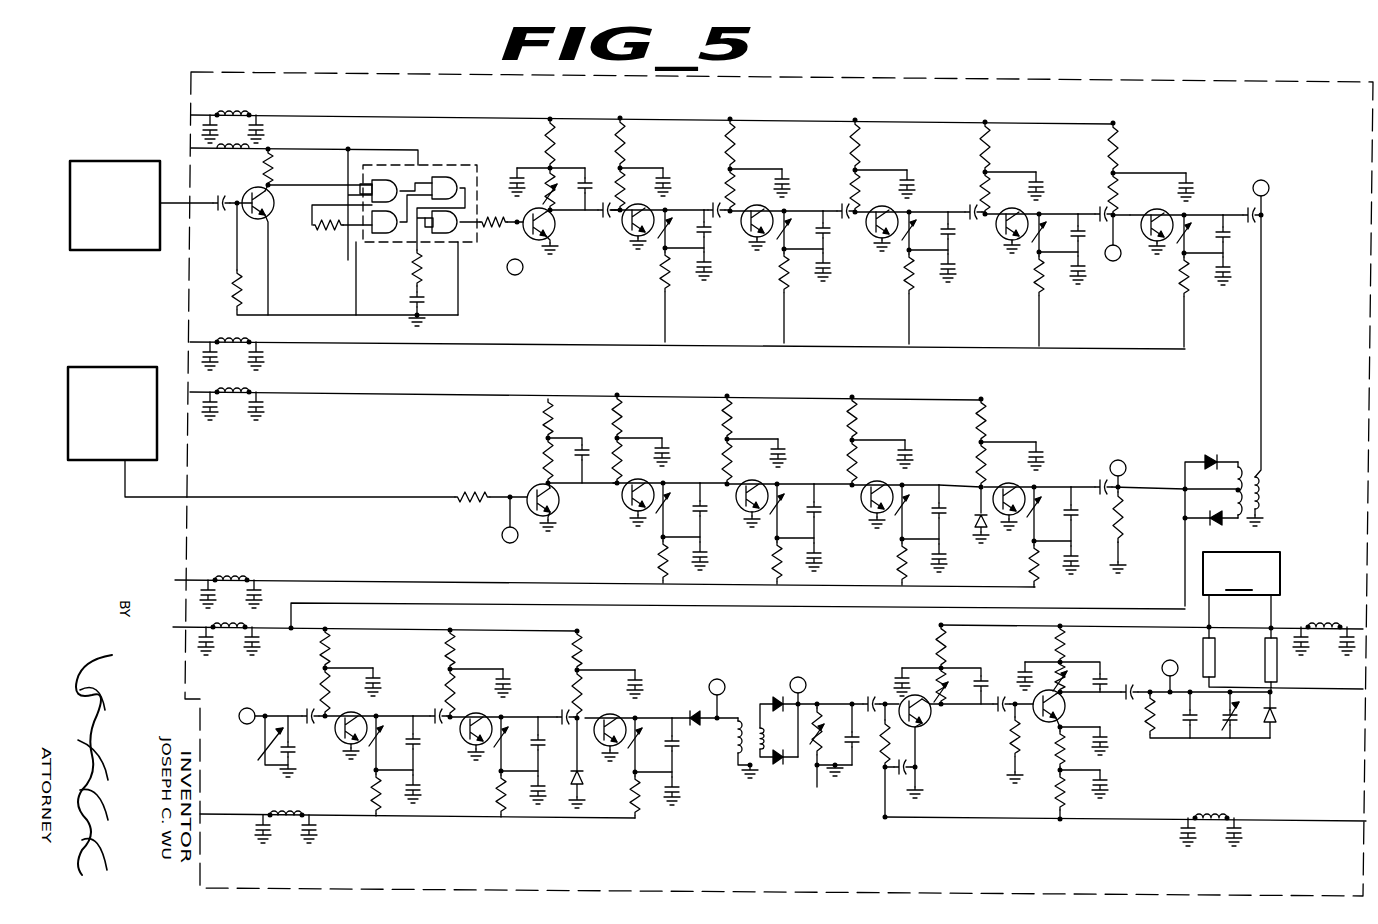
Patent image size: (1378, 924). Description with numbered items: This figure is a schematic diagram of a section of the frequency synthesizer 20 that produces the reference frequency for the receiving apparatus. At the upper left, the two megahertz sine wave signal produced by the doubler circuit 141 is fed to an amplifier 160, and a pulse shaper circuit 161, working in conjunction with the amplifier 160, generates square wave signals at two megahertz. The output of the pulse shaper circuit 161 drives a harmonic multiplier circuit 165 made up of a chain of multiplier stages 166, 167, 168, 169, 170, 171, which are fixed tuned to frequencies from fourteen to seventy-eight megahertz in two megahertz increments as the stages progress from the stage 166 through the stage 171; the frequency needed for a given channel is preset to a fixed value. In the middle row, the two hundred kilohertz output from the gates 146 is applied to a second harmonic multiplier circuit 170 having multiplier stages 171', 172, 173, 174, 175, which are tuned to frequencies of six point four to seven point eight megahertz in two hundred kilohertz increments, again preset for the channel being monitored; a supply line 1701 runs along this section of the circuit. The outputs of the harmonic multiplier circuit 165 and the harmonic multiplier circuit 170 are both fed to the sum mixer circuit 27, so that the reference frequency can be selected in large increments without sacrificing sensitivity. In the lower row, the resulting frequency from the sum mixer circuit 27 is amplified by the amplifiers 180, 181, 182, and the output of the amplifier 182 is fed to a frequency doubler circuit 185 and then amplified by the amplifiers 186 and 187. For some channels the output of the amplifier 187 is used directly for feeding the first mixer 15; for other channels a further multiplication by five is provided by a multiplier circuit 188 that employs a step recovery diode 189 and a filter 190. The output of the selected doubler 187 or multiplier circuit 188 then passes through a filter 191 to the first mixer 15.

The frequency synthesizer 20 is at (186, 525).
The doubler circuit 141 is at (108, 160).
The gates 146 is at (88, 460).
The amplifier 160 is at (270, 220).
The pulse shaper circuit 161 is at (440, 163).
The harmonic multiplier circuit 165 is at (1048, 122).
The multiplier stage 166 is at (547, 244).
The multiplier stage 167 is at (632, 244).
The multiplier stage 168 is at (744, 243).
The multiplier stage 169 is at (868, 245).
The harmonic multiplier circuit 170 is at (1000, 240).
The multiplier stage 171 is at (1188, 299).
The multiplier stage 171' is at (567, 483).
The multiplier stage 172 is at (626, 510).
The multiplier stage 173 is at (748, 512).
The multiplier stage 174 is at (870, 512).
The multiplier stage 175 is at (1000, 512).
The supply line 1701 is at (840, 585).
The sum mixer circuit 27 is at (1148, 476).
The first mixer 15 is at (1268, 595).
The amplifier 180 is at (340, 748).
The amplifier 181 is at (464, 750).
The amplifier 182 is at (622, 717).
The frequency doubler circuit 185 is at (809, 763).
The amplifier 186 is at (925, 728).
The amplifier 187 is at (1067, 720).
The multiplier circuit 188 is at (1249, 742).
The step recovery diode 189 is at (1273, 718).
The filter 190 is at (1200, 740).
The filter 191 is at (1203, 652).